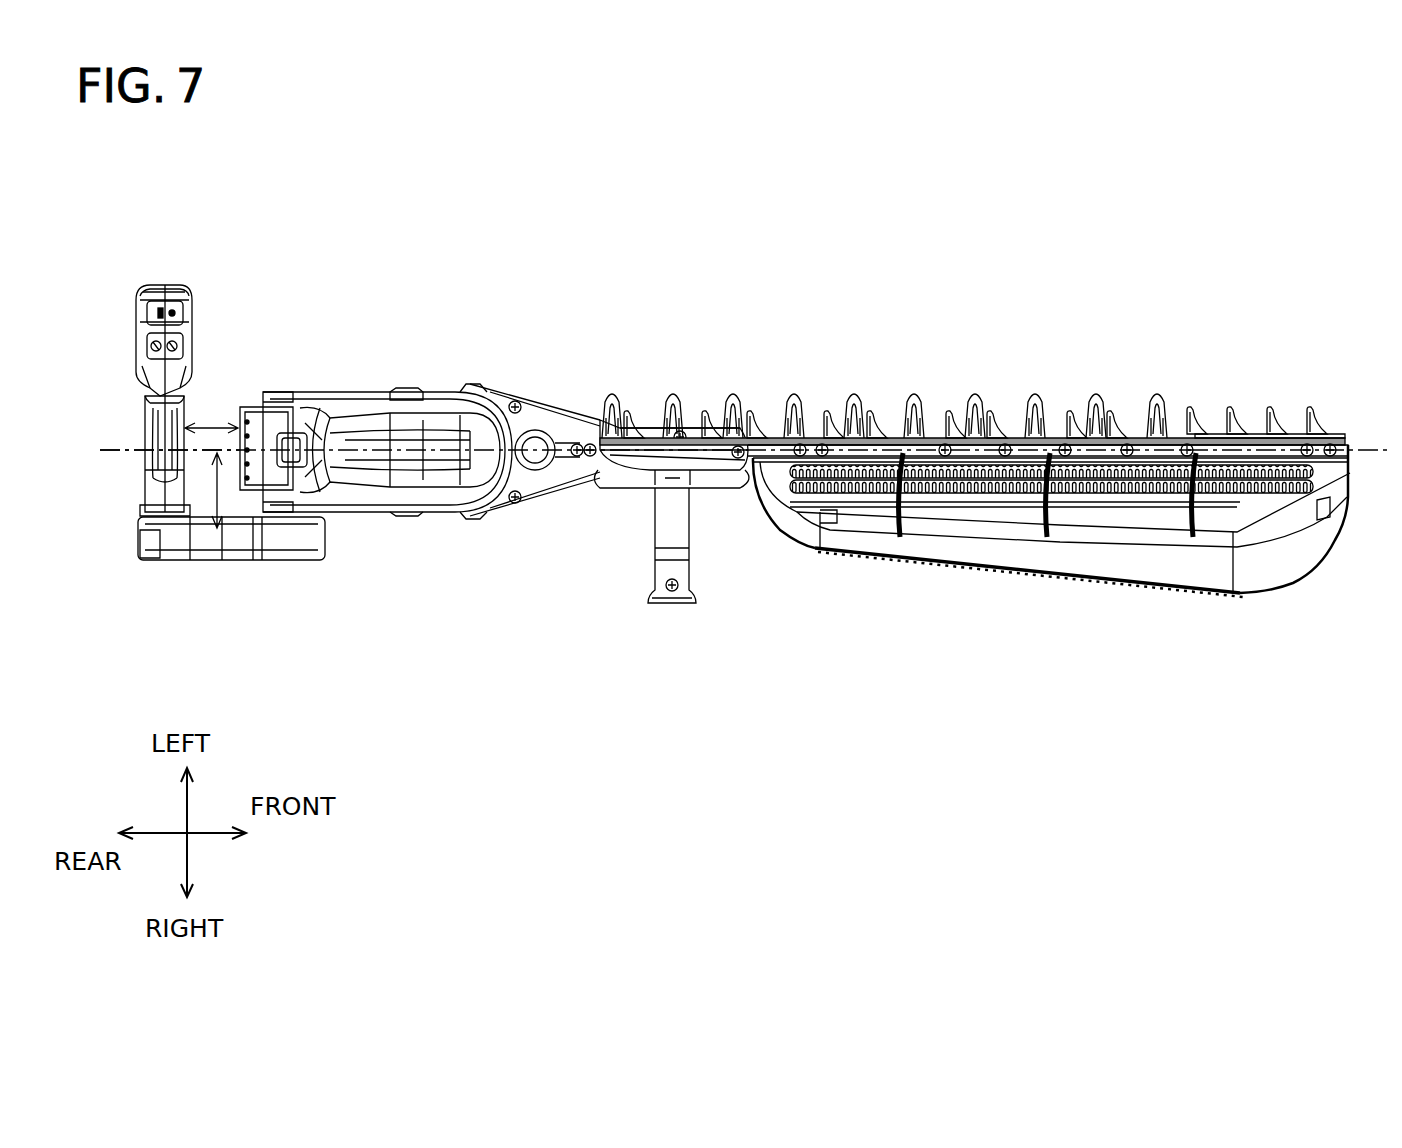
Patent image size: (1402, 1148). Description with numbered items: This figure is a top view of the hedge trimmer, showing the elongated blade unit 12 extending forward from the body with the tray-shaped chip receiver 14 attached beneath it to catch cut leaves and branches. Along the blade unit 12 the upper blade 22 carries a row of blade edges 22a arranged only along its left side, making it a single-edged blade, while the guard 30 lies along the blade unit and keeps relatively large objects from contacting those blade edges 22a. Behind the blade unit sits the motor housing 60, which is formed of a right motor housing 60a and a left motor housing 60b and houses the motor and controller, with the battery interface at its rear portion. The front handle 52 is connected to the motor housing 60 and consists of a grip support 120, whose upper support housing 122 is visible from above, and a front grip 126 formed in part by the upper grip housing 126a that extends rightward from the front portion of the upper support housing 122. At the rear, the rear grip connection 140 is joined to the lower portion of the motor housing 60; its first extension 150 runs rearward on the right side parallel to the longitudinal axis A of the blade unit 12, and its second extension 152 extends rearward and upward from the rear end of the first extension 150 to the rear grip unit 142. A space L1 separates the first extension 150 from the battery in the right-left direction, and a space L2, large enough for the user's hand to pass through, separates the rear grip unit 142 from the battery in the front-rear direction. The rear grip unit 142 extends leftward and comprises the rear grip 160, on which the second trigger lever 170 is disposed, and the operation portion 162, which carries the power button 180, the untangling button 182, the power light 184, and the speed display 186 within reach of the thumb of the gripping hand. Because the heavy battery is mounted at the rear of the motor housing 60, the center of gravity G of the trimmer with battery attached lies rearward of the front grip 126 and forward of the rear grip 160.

The blade unit 12 is at (1122, 302).
The chip receiver 14 is at (1152, 565).
The upper blade 22 is at (1322, 395).
The blade edges 22a is at (1273, 412).
The guard 30 is at (1165, 386).
The front handle 52 is at (672, 330).
The motor housing 60 is at (420, 305).
The right motor housing 60a is at (478, 392).
The left motor housing 60b is at (465, 520).
The grip support 120 is at (632, 355).
The upper support housing 122 is at (707, 412).
The front grip 126 is at (684, 608).
The upper grip housing 126a is at (660, 548).
The rear grip connection 140 is at (275, 650).
The rear grip unit 142 is at (85, 396).
The first extension 150 is at (300, 563).
The second extension 152 is at (175, 563).
The rear grip 160 is at (148, 480).
The operation portion 162 is at (172, 258).
The second trigger lever 170 is at (152, 413).
The power button 180 is at (143, 326).
The untangling button 182 is at (187, 341).
The power light 184 is at (190, 297).
The speed display 186 is at (140, 291).
The longitudinal axis A is at (120, 455).
The center of gravity G is at (580, 445).
The space L1 is at (215, 530).
The space L2 is at (215, 425).